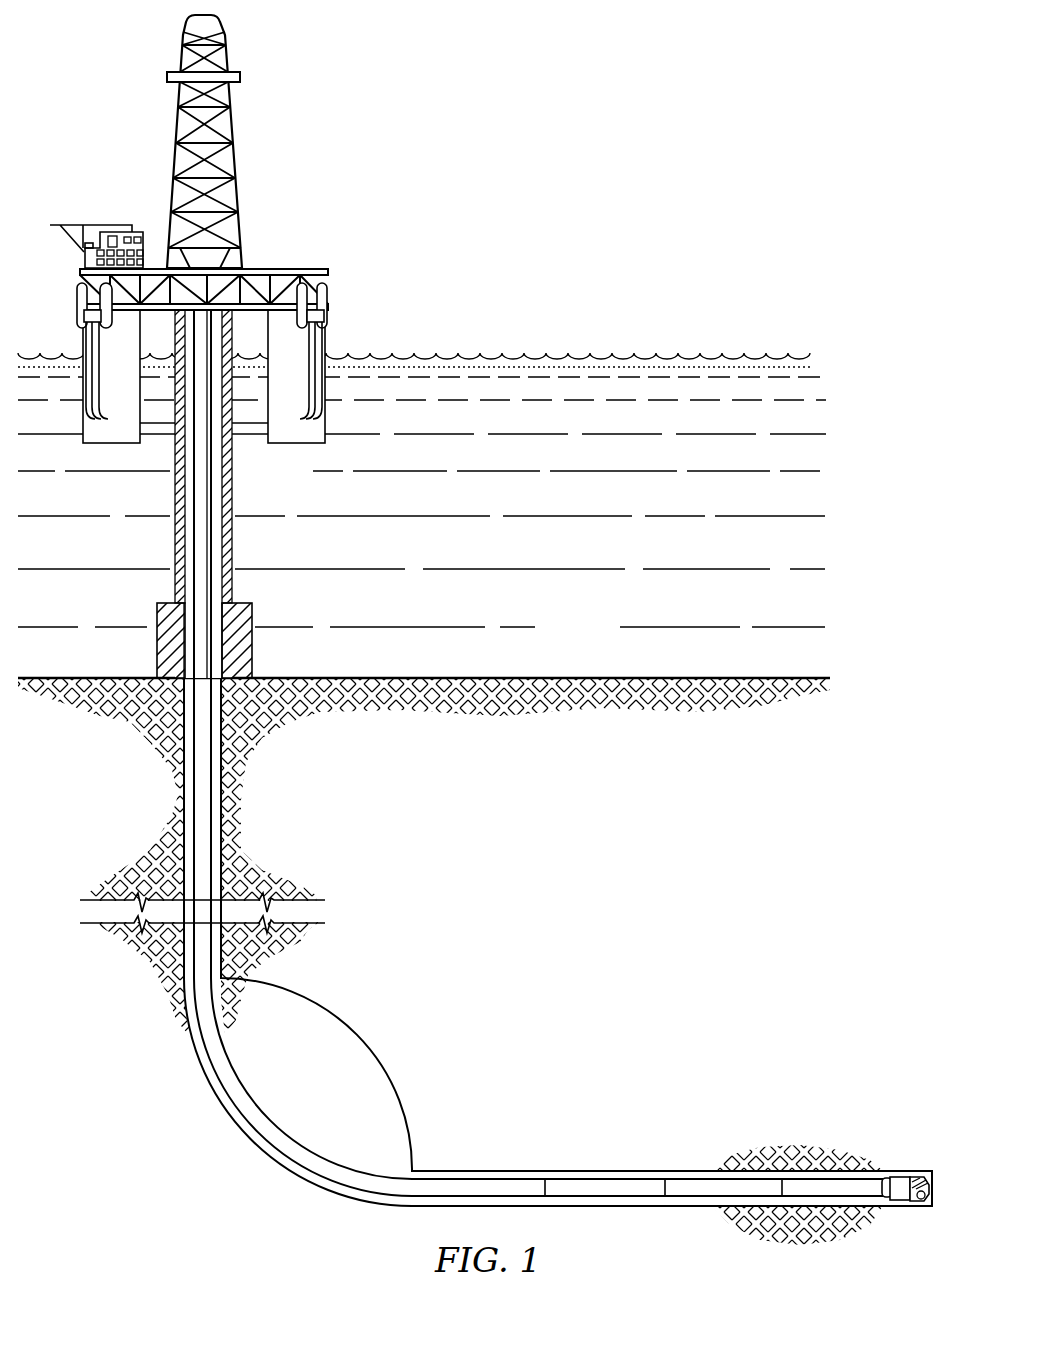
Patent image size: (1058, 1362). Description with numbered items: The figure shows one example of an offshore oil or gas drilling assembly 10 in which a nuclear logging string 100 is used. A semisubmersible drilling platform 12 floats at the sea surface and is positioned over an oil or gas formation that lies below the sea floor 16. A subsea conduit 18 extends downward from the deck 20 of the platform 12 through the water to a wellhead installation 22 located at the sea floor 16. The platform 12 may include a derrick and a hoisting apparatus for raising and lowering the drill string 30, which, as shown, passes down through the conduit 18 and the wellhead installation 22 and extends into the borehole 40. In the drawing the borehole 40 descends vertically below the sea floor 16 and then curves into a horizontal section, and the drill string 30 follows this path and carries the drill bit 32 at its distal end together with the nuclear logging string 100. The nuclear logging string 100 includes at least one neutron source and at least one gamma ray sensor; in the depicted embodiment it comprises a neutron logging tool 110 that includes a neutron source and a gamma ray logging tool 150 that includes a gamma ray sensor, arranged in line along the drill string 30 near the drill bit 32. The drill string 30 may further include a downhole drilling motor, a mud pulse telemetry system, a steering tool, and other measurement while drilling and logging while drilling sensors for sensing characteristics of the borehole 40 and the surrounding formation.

The offshore oil or gas drilling assembly 10 is at (330, 140).
The semisubmersible drilling platform 12 is at (312, 268).
The sea floor 16 is at (483, 678).
The subsea conduit 18 is at (233, 541).
The deck 20 is at (335, 305).
The wellhead installation 22 is at (244, 603).
The drill string 30 is at (203, 457).
The drill bit 32 is at (901, 1175).
The borehole 40 is at (186, 795).
The nuclear logging string 100 is at (679, 1140).
The neutron logging tool 110 is at (600, 1186).
The gamma ray logging tool 150 is at (700, 1197).